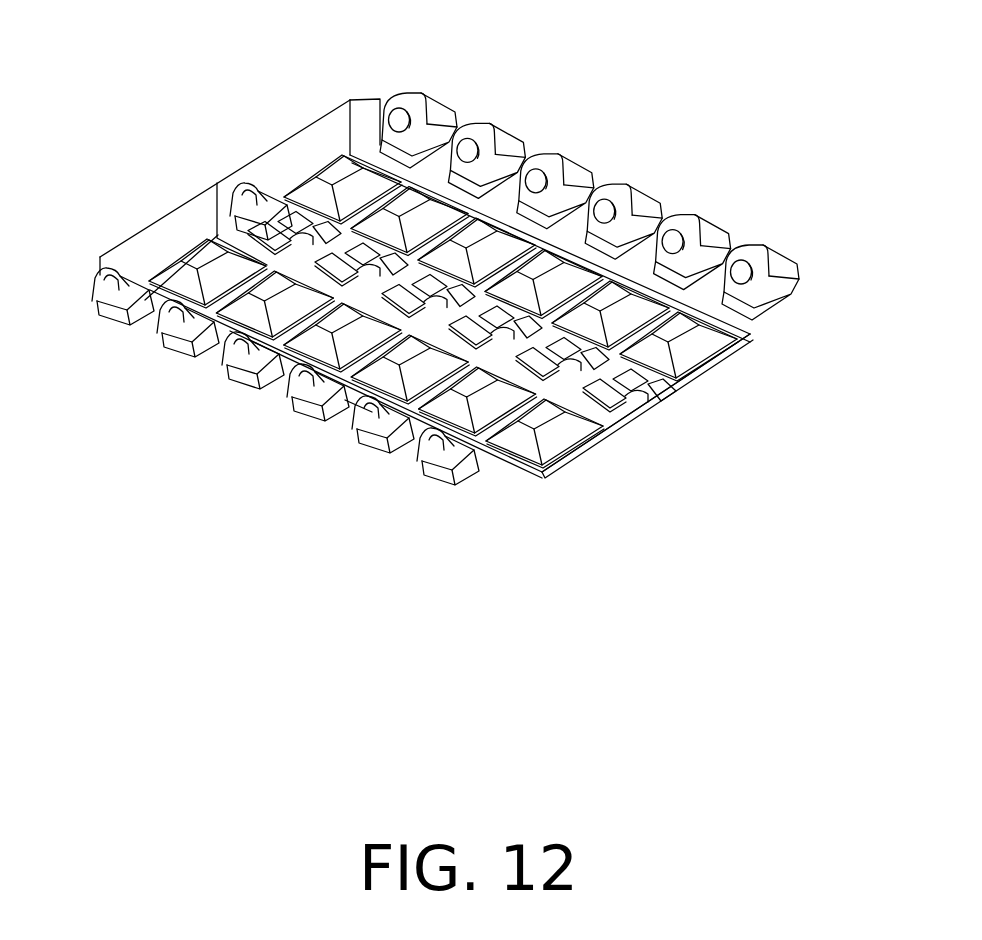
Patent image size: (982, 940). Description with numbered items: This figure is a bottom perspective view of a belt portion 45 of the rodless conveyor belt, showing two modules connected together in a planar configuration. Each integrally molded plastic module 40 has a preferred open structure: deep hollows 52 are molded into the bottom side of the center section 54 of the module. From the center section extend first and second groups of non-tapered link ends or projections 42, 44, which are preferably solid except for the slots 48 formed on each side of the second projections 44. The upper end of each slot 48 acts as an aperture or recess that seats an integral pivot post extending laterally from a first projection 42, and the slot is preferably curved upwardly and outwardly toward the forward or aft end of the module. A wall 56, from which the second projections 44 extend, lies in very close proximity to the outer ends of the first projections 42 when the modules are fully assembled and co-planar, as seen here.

The module 40 is at (300, 112).
The first projections 42 is at (563, 163).
The second projections 44 is at (456, 468).
The belt portion 45 is at (738, 152).
The slots 48 is at (113, 287).
The deep hollows 52 is at (690, 338).
The center section 54 is at (337, 107).
The wall 56 is at (357, 406).